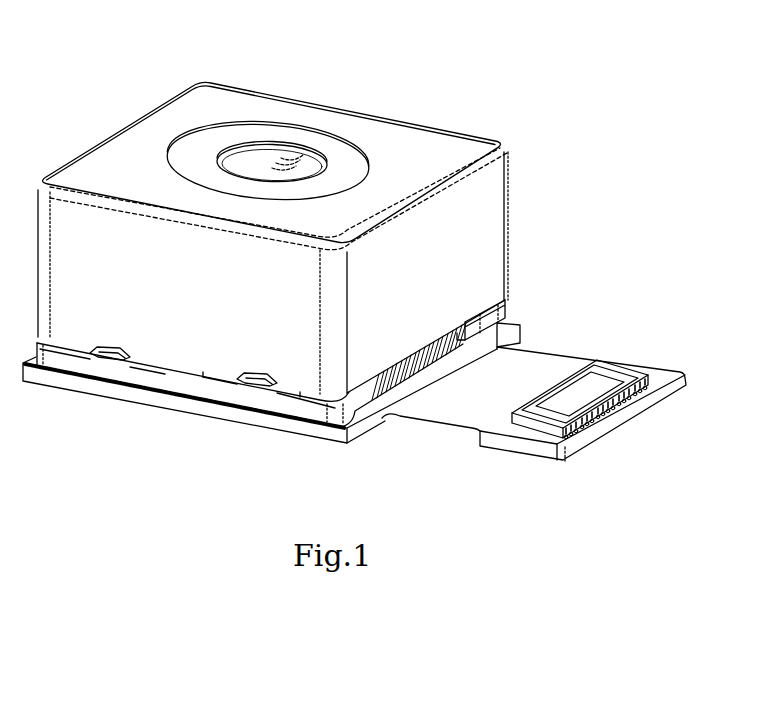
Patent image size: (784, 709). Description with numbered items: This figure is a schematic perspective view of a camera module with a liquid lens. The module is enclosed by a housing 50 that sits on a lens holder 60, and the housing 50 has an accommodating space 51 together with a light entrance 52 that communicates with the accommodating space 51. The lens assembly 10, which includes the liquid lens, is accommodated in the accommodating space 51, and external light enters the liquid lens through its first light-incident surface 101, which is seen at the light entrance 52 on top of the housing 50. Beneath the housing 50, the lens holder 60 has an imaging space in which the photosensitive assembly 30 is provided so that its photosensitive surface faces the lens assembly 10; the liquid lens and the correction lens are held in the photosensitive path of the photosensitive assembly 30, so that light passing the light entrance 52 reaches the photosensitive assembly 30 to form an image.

The lens assembly 10 is at (291, 163).
The first light-incident surface 101 is at (282, 152).
The housing 50 is at (428, 142).
The accommodating space 51 is at (238, 161).
The light entrance 52 is at (250, 156).
The lens holder 60 is at (113, 373).
The photosensitive assembly 30 is at (132, 393).